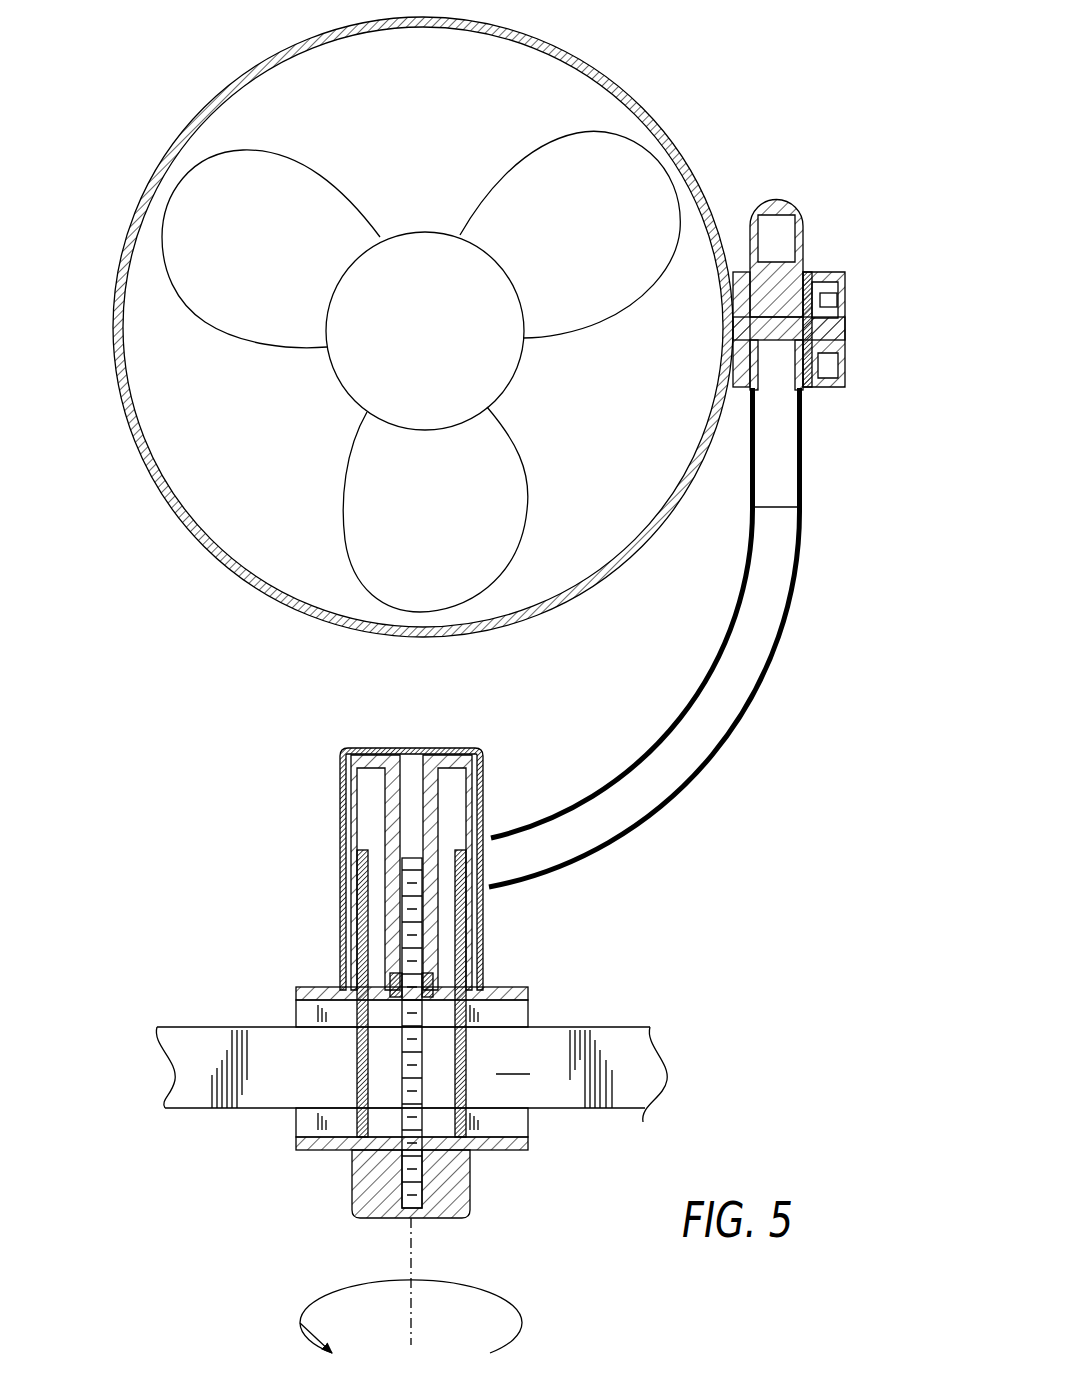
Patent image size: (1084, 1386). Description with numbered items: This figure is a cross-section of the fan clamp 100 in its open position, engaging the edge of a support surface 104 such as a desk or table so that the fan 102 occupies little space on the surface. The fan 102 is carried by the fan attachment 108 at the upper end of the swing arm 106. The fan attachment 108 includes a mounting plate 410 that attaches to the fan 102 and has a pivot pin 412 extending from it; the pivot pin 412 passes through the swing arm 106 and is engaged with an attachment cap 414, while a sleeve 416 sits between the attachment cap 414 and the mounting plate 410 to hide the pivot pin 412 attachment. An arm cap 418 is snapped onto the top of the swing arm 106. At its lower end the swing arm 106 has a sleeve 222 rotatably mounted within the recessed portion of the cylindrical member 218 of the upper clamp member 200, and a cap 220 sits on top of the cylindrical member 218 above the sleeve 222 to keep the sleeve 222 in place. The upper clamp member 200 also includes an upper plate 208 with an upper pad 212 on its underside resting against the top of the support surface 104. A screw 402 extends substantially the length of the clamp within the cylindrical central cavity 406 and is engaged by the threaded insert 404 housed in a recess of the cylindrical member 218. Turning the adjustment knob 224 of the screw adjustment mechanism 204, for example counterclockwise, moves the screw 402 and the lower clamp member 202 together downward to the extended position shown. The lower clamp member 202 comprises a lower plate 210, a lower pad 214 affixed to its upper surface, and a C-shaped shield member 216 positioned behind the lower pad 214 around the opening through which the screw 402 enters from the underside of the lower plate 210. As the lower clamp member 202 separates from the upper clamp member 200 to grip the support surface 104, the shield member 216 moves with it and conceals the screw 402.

The fan clamp 100 is at (220, 837).
The fan 102 is at (583, 57).
The support surface 104 is at (411, 1074).
The swing arm 106 is at (800, 553).
The fan attachment 108 is at (830, 272).
The upper clamp member 200 is at (300, 812).
The lower clamp member 202 is at (540, 1212).
The screw adjustment mechanism 204 is at (358, 1230).
The upper plate 208 is at (332, 987).
The lower plate 210 is at (313, 1152).
The upper pad 212 is at (518, 1015).
The lower pad 214 is at (540, 1123).
The shield member 216 is at (482, 998).
The cylindrical member 218 is at (483, 965).
The cap 220 is at (447, 748).
The sleeve 222 is at (340, 812).
The adjustment knob 224 is at (470, 1228).
The screw 402 is at (405, 898).
The threaded insert 404 is at (392, 992).
The cylindrical central cavity 406 is at (408, 775).
The mounting plate 410 is at (733, 272).
The pivot pin 412 is at (800, 393).
The attachment cap 414 is at (845, 312).
The sleeve 416 is at (808, 272).
The arm cap 418 is at (770, 198).